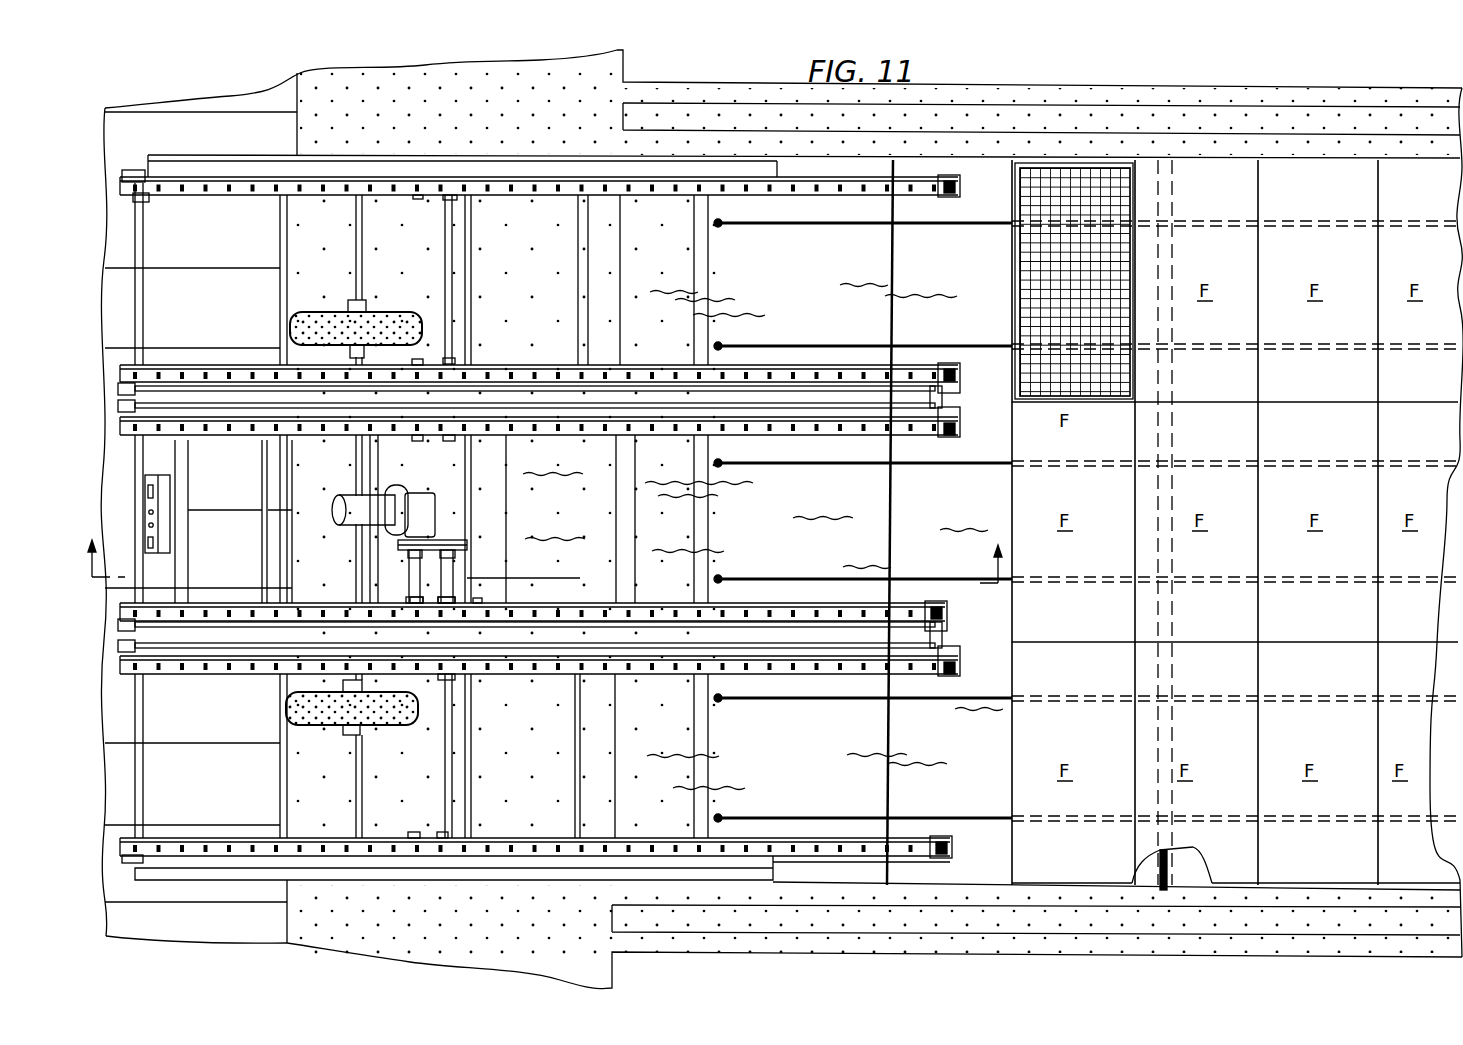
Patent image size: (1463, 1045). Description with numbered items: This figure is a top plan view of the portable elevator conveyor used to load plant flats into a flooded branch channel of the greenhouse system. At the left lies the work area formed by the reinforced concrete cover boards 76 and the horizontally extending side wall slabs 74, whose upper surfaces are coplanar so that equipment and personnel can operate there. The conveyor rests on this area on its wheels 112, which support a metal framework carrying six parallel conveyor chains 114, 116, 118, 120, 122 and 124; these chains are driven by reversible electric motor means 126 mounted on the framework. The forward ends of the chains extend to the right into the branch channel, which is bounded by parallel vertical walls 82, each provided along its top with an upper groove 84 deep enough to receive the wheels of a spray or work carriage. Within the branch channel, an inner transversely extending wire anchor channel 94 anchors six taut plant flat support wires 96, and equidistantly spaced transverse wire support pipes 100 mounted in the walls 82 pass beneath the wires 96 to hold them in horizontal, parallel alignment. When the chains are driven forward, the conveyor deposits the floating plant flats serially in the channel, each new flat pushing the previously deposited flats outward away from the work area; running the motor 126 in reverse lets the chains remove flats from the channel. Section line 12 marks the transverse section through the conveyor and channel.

The section line 12- 12 is at (544, 550).
The side wall slab 74 is at (392, 80).
The boards 76 is at (283, 131).
The vertical walls 82 is at (1165, 93).
The upper groove 84 is at (1297, 122).
The wire anchor channel 94 is at (703, 269).
The plant flat support wires 96 is at (955, 342).
The wire support pipes 100 is at (1168, 873).
The wheels 112 is at (415, 312).
The conveyor chain 114 is at (798, 847).
The conveyor chain 116 is at (797, 680).
The conveyor chain 118 is at (830, 610).
The conveyor chain 120 is at (823, 432).
The conveyor chain 122 is at (787, 369).
The conveyor chain 124 is at (806, 212).
The reversible electric motor means 126 is at (343, 525).